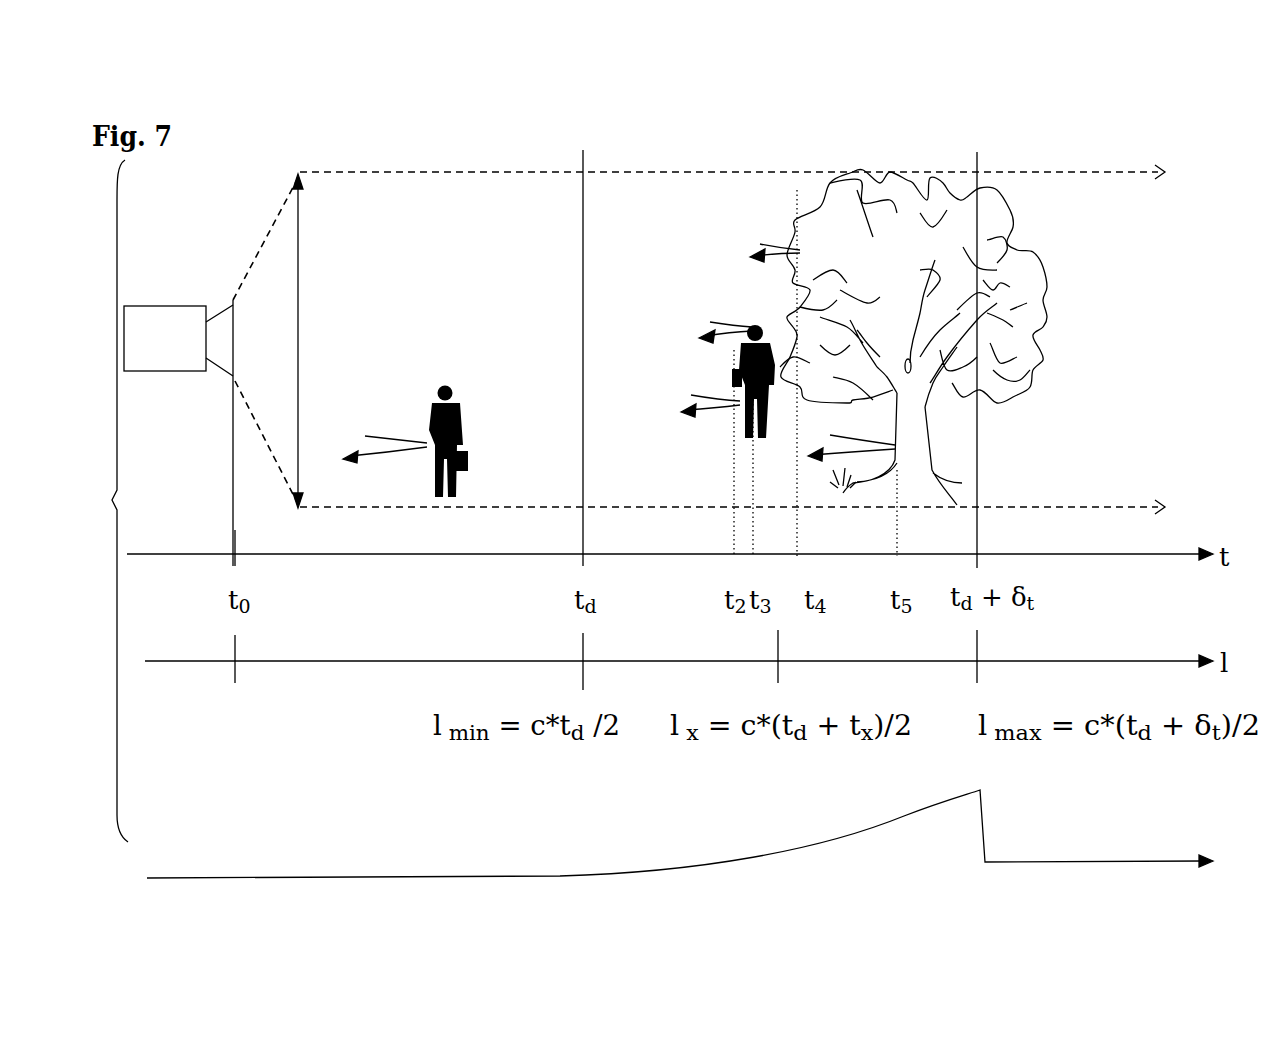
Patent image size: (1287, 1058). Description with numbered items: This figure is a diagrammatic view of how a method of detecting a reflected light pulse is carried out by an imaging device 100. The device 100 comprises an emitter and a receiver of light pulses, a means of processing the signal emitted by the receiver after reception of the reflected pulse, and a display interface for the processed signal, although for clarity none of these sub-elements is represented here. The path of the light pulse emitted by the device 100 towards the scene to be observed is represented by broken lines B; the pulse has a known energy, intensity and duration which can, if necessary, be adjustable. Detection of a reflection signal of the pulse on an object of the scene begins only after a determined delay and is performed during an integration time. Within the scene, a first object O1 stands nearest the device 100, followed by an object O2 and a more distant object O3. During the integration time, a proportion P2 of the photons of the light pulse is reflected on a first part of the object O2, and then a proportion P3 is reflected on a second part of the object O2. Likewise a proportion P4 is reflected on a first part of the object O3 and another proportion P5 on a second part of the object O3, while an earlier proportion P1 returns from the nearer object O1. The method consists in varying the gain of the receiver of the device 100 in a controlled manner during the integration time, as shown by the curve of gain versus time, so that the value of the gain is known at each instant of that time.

The imaging device 100 is at (157, 345).
The broken lines B is at (1133, 173).
The first object (person) O1 is at (432, 490).
The object O2 is at (740, 432).
The object O3 is at (870, 310).
The first reflected light pulse P1 is at (370, 460).
The proportion of photons P2 is at (700, 400).
The proportion of photons P3 is at (730, 345).
The proportion of photons P4 is at (773, 253).
The proportion of photons P5 is at (818, 458).